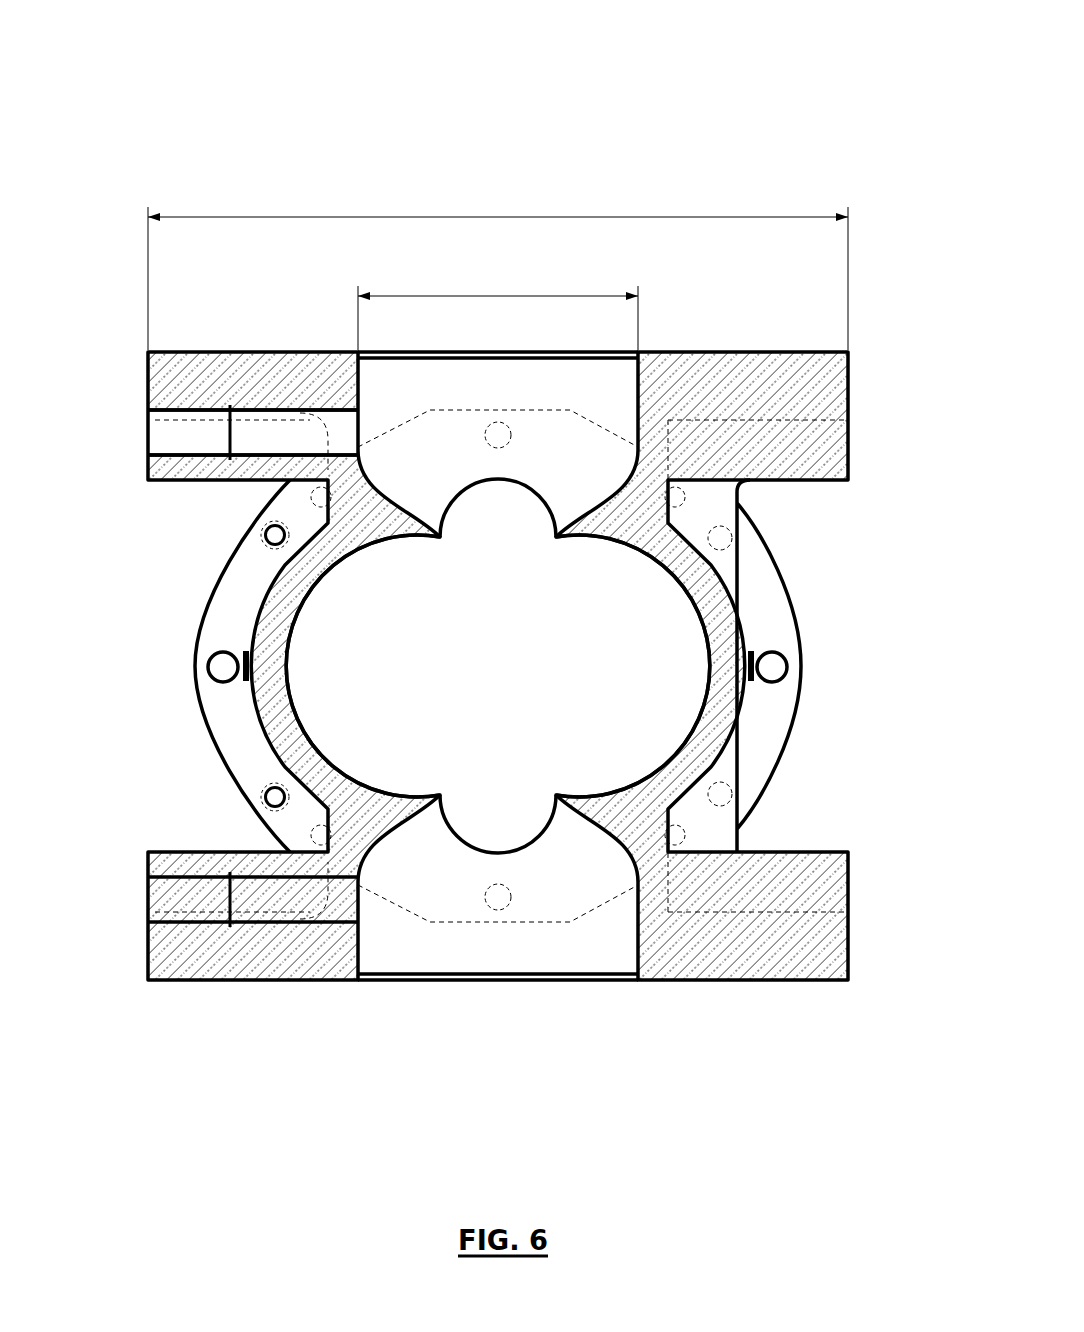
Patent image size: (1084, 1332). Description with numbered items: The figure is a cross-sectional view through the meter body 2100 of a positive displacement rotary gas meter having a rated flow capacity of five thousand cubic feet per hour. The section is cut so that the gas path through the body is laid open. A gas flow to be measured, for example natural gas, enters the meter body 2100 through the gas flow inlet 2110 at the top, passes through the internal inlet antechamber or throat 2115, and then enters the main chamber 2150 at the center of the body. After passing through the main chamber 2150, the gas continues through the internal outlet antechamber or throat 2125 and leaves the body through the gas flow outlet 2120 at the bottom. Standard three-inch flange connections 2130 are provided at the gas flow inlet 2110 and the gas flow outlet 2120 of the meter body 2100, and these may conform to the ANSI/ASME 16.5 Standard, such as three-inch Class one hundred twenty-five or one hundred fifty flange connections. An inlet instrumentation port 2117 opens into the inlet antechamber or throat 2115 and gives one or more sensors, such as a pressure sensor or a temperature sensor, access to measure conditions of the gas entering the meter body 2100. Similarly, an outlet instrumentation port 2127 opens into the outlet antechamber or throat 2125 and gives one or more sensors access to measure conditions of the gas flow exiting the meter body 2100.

The meter body 2100 is at (779, 39).
The gas flow inlet 2110 is at (584, 382).
The gas flow outlet 2120 is at (585, 955).
The inlet antechamber or throat 2115 is at (580, 487).
The outlet antechamber or throat 2125 is at (600, 865).
The main chamber 2150 is at (672, 665).
The flange connections 2130 is at (808, 351).
The inlet instrumentation port 2117 is at (265, 440).
The outlet instrumentation port 2127 is at (265, 900).